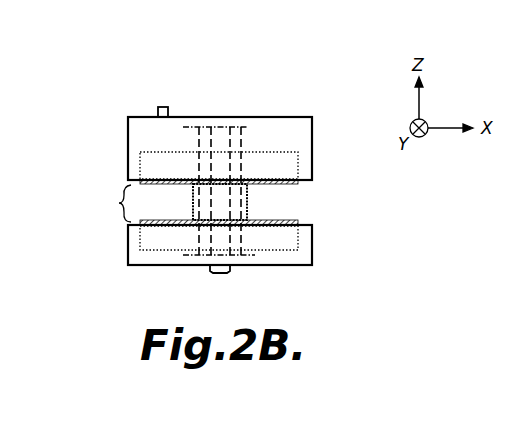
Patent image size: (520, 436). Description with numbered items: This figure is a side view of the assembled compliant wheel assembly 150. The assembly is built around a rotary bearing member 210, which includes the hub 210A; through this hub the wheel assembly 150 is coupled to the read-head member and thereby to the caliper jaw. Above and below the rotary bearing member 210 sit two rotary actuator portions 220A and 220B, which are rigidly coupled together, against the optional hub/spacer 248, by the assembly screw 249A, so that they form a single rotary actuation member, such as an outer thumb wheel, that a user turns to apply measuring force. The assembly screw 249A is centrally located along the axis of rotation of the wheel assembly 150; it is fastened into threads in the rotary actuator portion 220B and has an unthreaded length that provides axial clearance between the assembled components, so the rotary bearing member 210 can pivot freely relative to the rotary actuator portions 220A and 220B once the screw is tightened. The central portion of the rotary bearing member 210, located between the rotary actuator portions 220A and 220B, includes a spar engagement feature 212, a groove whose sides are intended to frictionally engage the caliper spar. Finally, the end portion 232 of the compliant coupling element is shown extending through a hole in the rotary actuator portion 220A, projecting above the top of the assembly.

The compliant wheel assembly 150 is at (243, 163).
The rotary actuator portion 220A is at (128, 142).
The rotary actuator portion 220B is at (128, 256).
The rotary bearing member 210 is at (268, 173).
The hub 210A is at (247, 200).
The spar engagement feature 212 is at (118, 205).
The hub/spacer 248 is at (241, 138).
The end portion 232 is at (163, 106).
The assembly screw 249A is at (220, 273).